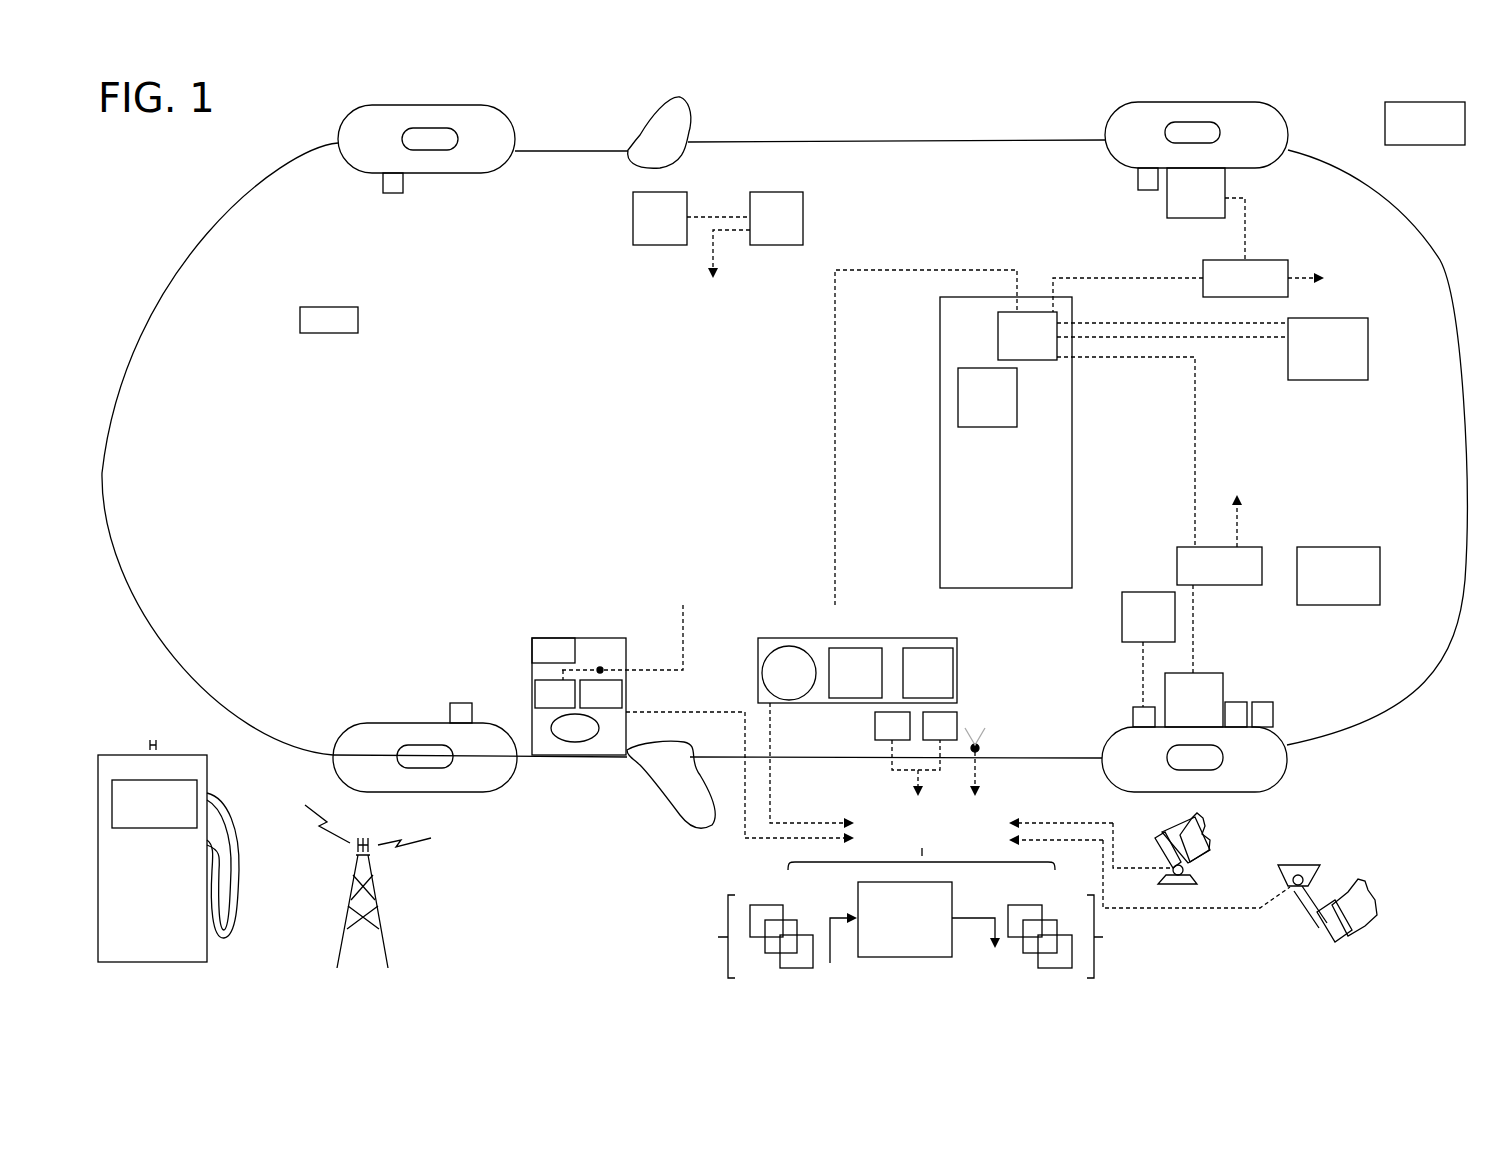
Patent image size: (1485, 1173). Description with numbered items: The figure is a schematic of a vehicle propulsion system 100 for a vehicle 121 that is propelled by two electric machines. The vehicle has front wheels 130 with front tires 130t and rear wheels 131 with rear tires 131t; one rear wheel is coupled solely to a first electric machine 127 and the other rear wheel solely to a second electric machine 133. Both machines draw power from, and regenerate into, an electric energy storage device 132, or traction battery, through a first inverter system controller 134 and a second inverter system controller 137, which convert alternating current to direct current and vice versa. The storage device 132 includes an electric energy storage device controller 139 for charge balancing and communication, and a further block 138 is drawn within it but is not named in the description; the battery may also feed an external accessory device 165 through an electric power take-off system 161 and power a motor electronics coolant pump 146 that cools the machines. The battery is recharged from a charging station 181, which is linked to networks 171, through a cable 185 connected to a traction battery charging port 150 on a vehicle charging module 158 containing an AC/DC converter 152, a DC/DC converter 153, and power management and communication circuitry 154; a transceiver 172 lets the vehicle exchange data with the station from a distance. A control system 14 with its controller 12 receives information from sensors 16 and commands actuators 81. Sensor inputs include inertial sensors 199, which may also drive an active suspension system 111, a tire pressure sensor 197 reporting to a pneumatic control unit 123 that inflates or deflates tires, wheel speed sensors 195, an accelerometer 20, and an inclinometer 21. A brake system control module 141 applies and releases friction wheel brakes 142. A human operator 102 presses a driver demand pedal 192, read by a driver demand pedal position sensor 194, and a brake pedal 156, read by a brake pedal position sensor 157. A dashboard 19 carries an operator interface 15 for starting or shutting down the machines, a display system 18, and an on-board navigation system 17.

The vehicle propulsion system 100 is at (930, 113).
The front tire 130t is at (430, 105).
The front wheel 130 is at (485, 142).
The rear tire 131t is at (1228, 102).
The rear wheel 131 is at (1290, 135).
The friction wheel brake 142 is at (392, 193).
The external accessory device 165 is at (1425, 123).
The motor electronics coolant pump 146 is at (329, 320).
The active suspension system 111 is at (691, 218).
The inertial sensors 199 is at (751, 259).
The first electric machine 127 is at (1206, 214).
The first inverter system controller 134 is at (1205, 286).
The electric energy storage device 132 is at (1006, 442).
The battery controller 138 is at (1061, 437).
The electric energy storage device controller 139 is at (987, 397).
The electric power take-off system 161 is at (1328, 349).
The second inverter system controller 137 is at (1219, 559).
The brake system control module 141 is at (1338, 576).
The pneumatic control unit 123 is at (1148, 649).
The tire pressure sensor 197 is at (1147, 706).
The second electric machine 133 is at (1194, 700).
The wheel speed sensor 195 is at (1237, 702).
The vehicle charging module 158 is at (569, 620).
The power management and communication circuitry 154 is at (553, 650).
The AC/DC converter 152 is at (555, 694).
The DC/DC converter 153 is at (601, 694).
The traction battery charging port 150 is at (583, 730).
The dashboard 19 is at (890, 638).
The operator interface 15 is at (789, 673).
The display system 18 is at (855, 673).
The on-board navigation system 17 is at (928, 673).
The inclinometer 21 is at (907, 753).
The accelerometer 20 is at (940, 726).
The transceiver 172 is at (985, 746).
The control system 14 is at (950, 839).
The controller 12 is at (912, 922).
The sensors 16 is at (727, 936).
The actuators 81 is at (1099, 936).
The driver demand pedal 192 is at (1162, 852).
The driver demand pedal position sensor 194 is at (1190, 870).
The human operator 102 is at (1195, 832).
The brake pedal position sensor 157 is at (1290, 880).
The brake pedal 156 is at (1322, 929).
The vehicle 121 is at (1402, 748).
The charging station 181 is at (207, 770).
The cable 185 is at (238, 926).
The networks 171 is at (375, 898).